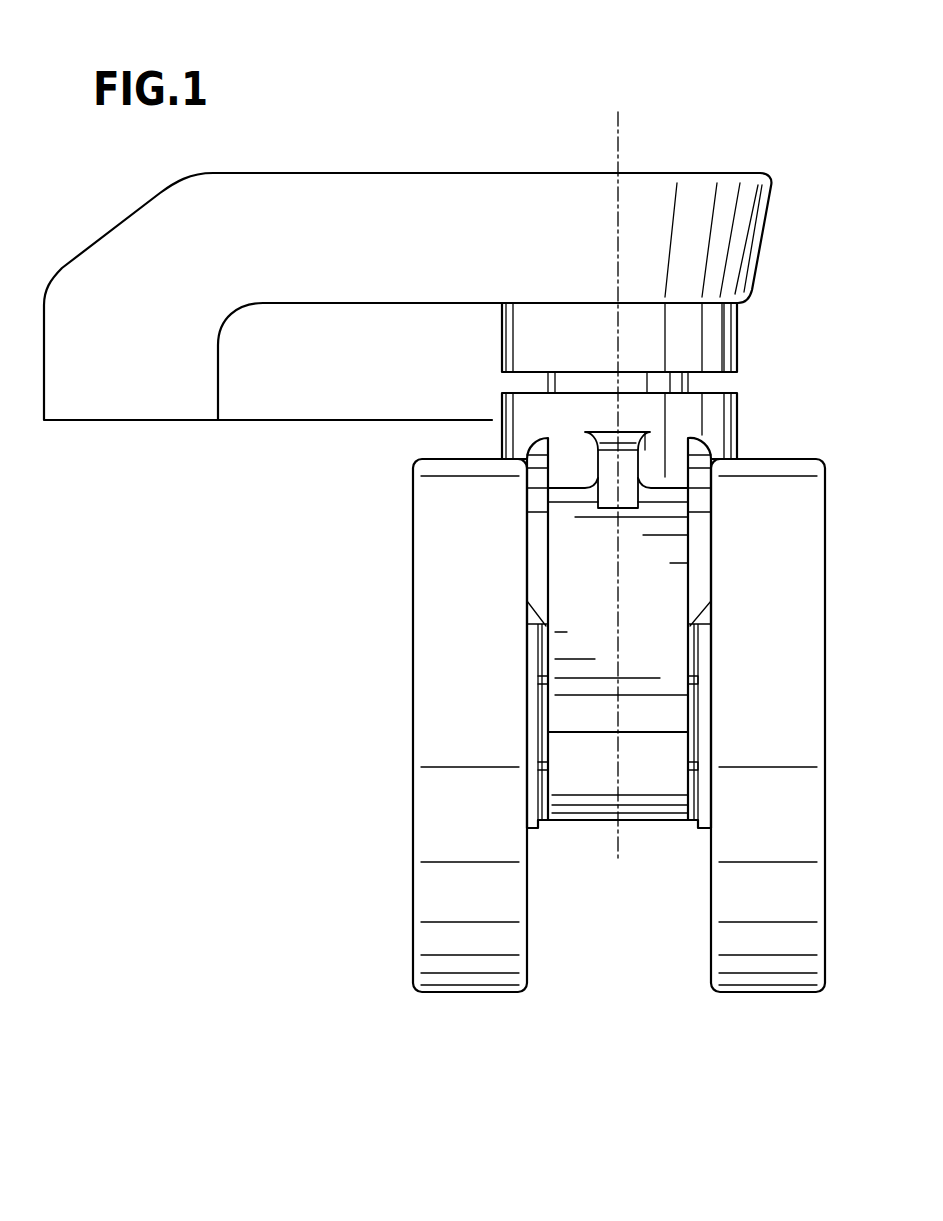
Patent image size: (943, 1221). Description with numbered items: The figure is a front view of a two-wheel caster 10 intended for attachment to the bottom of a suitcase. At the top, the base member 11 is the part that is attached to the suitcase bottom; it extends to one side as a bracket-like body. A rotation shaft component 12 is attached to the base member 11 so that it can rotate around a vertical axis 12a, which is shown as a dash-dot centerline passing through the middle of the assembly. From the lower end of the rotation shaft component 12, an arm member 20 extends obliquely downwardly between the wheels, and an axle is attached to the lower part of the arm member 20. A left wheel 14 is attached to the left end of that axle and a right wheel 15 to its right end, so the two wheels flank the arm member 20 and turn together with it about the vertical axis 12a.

The two-wheel caster 10 is at (738, 82).
The base member 11 is at (362, 205).
The rotation shaft component 12 is at (716, 421).
The vertical axis 12a is at (618, 125).
The left wheel 14 is at (466, 963).
The right wheel 15 is at (766, 963).
The arm member 20 is at (651, 780).